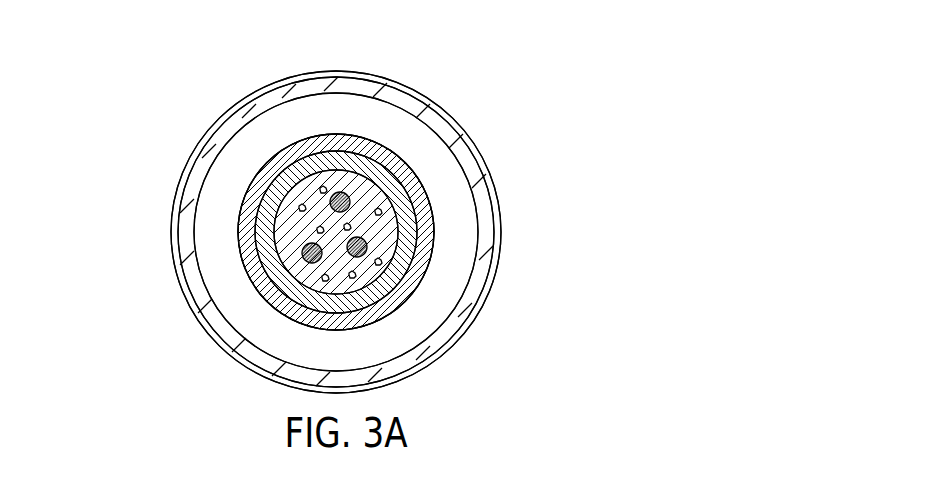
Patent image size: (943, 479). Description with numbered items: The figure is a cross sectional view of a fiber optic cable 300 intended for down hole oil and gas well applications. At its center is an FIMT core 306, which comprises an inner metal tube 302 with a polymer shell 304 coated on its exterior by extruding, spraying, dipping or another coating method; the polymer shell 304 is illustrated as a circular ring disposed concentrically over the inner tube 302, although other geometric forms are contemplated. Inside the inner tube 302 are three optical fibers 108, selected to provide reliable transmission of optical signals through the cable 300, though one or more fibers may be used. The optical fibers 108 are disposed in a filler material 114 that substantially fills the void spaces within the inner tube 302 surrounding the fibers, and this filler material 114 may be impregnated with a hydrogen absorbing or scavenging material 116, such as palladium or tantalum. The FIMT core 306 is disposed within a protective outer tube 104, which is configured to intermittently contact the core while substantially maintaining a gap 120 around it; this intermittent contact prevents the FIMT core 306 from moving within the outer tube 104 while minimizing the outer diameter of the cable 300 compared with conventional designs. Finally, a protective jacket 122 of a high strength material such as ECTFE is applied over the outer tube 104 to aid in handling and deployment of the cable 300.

The fiber optic cable 300 is at (517, 50).
The outer tube 104 is at (217, 117).
The protective jacket 122 is at (498, 210).
The gap 120 is at (442, 182).
The polymer shell 304 is at (387, 150).
The FIMT core 306 is at (338, 132).
The inner metal tube 302 is at (282, 282).
The filler material 114 is at (272, 261).
The optical fibers 108 is at (367, 246).
The hydrogen absorbing/scavenging material 116 is at (302, 210).